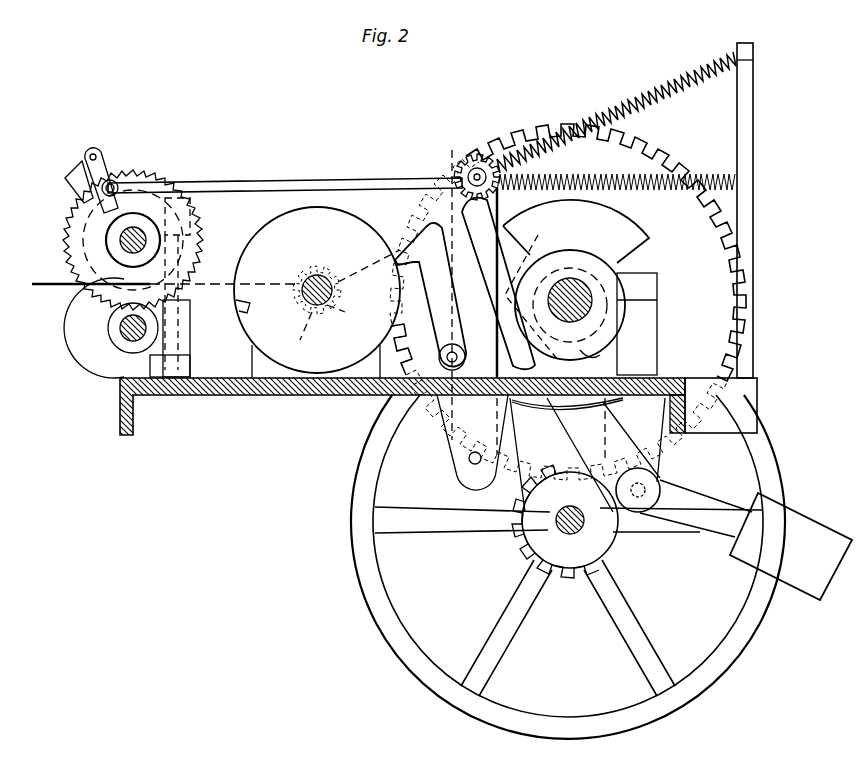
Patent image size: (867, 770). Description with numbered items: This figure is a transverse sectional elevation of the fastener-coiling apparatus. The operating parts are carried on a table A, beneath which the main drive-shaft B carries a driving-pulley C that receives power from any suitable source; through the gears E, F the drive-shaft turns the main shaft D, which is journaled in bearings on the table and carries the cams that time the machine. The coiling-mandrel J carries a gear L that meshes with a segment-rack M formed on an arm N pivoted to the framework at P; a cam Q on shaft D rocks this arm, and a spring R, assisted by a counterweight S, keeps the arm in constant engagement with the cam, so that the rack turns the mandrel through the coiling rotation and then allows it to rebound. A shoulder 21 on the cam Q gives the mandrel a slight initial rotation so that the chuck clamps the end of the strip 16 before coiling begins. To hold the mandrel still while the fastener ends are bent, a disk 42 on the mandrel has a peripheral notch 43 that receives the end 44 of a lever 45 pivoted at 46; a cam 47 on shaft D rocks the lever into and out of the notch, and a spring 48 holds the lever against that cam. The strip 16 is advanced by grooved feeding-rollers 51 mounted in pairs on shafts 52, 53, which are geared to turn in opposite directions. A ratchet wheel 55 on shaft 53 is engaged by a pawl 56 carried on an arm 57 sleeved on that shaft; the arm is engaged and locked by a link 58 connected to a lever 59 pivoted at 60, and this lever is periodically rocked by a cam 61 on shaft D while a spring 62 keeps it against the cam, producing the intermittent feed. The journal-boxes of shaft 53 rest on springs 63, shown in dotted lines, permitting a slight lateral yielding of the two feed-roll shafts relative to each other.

The strip 16 is at (50, 285).
The shoulder 21 is at (595, 353).
The disk 42 is at (271, 229).
The notch 43 is at (241, 313).
The end of lever 44 is at (400, 258).
The lever 45 is at (433, 322).
The pivot 46 is at (445, 368).
The cam 47 is at (615, 326).
The spring 48 is at (548, 407).
The grooved feeding-rollers 51 is at (90, 238).
The shaft 52 is at (130, 333).
The shaft 53 is at (136, 236).
The ratchet disk or wheel 55 is at (86, 216).
The pawl 56 is at (83, 172).
The arm 57 is at (110, 167).
The link 58 is at (304, 181).
The lever 59 is at (558, 331).
The pivot 60 is at (470, 461).
The cam 61 is at (522, 272).
The spring 62 is at (652, 178).
The springs 63 is at (208, 256).
The table A is at (256, 395).
The main drive-shaft B is at (562, 524).
The driving-pulley C is at (532, 722).
The main shaft D is at (592, 298).
The gear E is at (560, 570).
The gear F is at (637, 153).
The coiling-mandrel J is at (314, 278).
The gear L is at (348, 299).
The rack M is at (430, 222).
The arm or lever N is at (495, 284).
The pivot P is at (640, 498).
The cam Q is at (576, 231).
The spring R is at (588, 115).
The counterweight S is at (746, 540).